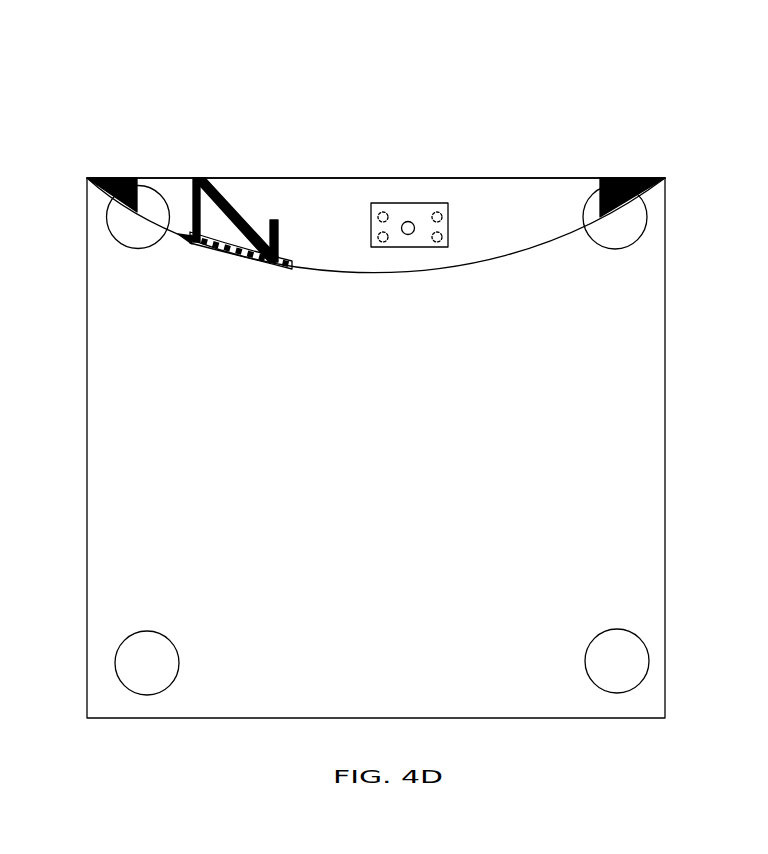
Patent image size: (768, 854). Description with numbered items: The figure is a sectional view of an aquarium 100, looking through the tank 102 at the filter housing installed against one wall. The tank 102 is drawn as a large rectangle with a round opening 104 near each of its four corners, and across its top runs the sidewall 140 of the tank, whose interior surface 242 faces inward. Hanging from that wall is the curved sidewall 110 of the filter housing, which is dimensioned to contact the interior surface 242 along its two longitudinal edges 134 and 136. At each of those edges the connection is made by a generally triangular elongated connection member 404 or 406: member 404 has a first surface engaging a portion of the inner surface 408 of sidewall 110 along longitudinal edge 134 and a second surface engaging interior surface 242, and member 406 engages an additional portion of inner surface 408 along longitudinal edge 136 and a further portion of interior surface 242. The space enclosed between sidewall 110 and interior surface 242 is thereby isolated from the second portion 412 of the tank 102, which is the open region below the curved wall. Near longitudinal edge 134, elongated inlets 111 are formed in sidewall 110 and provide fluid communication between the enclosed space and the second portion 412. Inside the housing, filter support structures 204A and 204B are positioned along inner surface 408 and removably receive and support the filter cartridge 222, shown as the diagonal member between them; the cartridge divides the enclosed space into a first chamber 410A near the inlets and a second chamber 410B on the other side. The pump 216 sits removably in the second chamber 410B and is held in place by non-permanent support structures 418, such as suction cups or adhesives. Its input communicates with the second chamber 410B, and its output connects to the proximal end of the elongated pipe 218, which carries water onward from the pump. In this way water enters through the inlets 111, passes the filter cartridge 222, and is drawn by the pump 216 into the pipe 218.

The aquarium 100 is at (639, 85).
The tank 102 is at (666, 410).
The mounting holes 104 is at (125, 242).
The sidewall 110 is at (507, 253).
The inlets 111 is at (230, 258).
The longitudinal edge 134 is at (87, 178).
The longitudinal edge 136 is at (665, 178).
The sidewall 140 is at (558, 178).
The filter support structure 204A is at (193, 178).
The filter support structure 204B is at (276, 220).
The pump 216 is at (433, 203).
The elongated pipe 218 is at (409, 234).
The filter cartridge 222 is at (235, 198).
The interior surface 242 is at (543, 191).
The elongated connection member 404 is at (110, 178).
The elongated connection member 406 is at (645, 178).
The inner surface 408 is at (325, 256).
The first chamber 410A is at (211, 230).
The second chamber 410B is at (338, 181).
The second portion 412 is at (649, 530).
The non-permanent support structures 418 is at (443, 217).